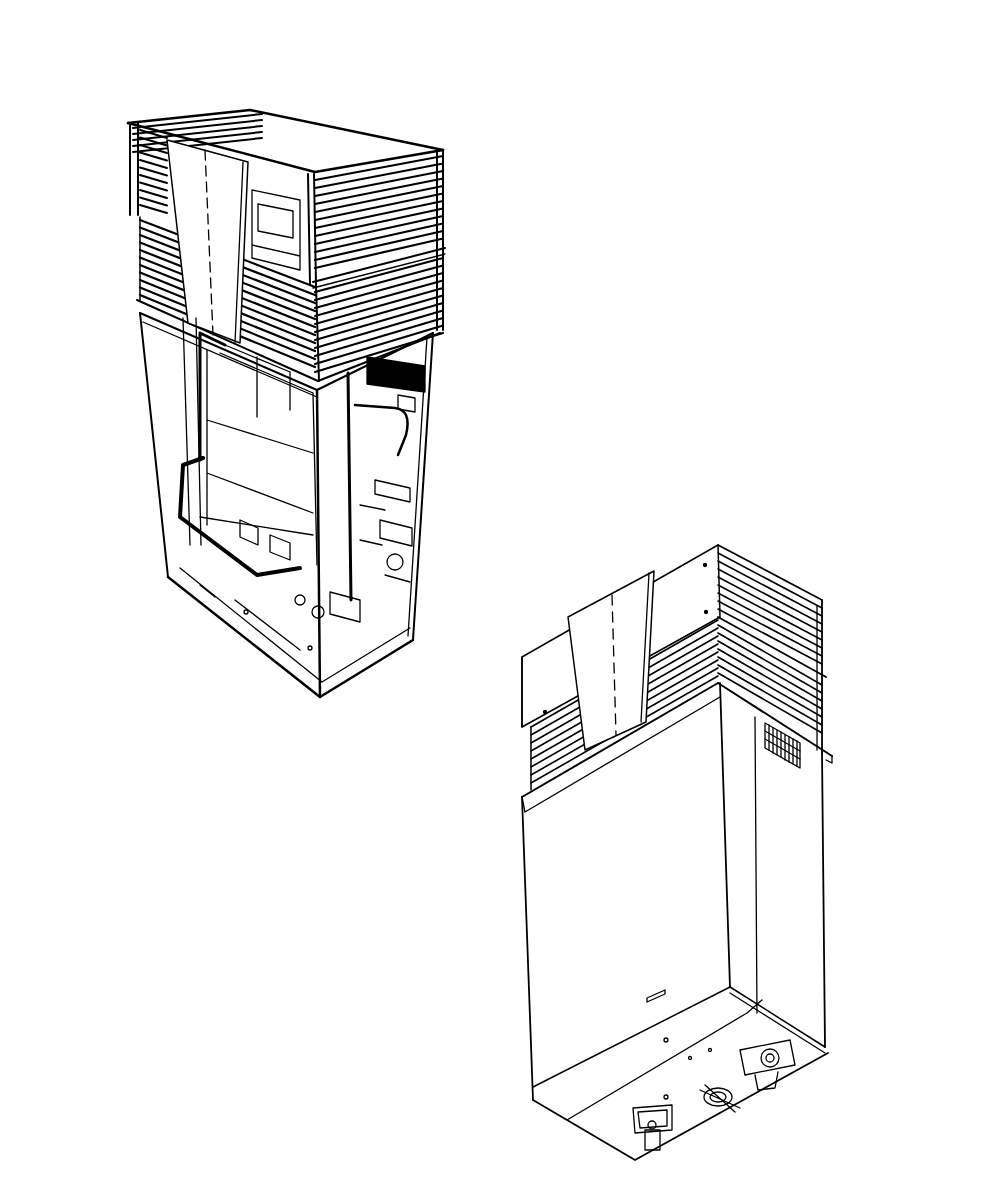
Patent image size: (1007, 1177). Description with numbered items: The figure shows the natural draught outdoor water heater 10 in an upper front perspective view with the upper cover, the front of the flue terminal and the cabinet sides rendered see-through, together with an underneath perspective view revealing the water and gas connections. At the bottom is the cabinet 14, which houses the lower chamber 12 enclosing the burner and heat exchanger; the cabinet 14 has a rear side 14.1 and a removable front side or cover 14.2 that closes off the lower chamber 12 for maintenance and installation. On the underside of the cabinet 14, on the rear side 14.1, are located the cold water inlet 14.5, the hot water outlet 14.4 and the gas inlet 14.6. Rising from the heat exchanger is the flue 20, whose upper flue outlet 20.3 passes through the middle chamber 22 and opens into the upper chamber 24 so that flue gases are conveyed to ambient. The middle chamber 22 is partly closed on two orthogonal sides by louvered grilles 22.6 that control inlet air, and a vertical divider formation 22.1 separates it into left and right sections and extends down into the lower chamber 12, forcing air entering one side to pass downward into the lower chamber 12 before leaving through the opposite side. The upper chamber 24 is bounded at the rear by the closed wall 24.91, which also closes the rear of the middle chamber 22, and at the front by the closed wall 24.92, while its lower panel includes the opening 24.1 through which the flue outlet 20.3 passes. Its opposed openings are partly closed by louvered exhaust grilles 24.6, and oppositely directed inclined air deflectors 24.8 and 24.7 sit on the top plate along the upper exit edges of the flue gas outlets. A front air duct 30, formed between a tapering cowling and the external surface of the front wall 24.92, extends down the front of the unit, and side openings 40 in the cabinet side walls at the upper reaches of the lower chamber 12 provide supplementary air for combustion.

In FIG. 6, the natural draught outdoor water heater 10 is at (567, 67).
In FIG. 6.1, the natural draught outdoor water heater 10 is at (741, 437).
In FIG. 6, the lower chamber 12 is at (183, 440).
In FIG. 6.1, the lower chamber 12 is at (547, 942).
In FIG. 6.1, the cabinet 14 is at (560, 908).
In FIG. 6, the rear side 14.1 is at (402, 602).
In FIG. 6.1, the rear side 14.1 is at (800, 847).
In FIG. 6, the front side or cover 14.2 is at (293, 655).
In FIG. 6.1, the front side or cover 14.2 is at (545, 930).
In FIG. 6.1, the hot water outlet 14.4 is at (662, 1143).
In FIG. 6.1, the cold water inlet 14.5 is at (770, 1077).
In FIG. 6.1, the gas inlet 14.6 is at (713, 1107).
In FIG. 6, the flue 20 is at (300, 413).
In FIG. 6, the flue outlet 20.3 is at (282, 210).
In FIG. 6, the middle chamber 22 is at (442, 308).
In FIG. 6.1, the middle chamber 22 is at (548, 757).
In FIG. 6, the divider formation 22.1 is at (393, 457).
In FIG. 6, the grilles 22.6 is at (440, 285).
In FIG. 6.1, the grilles 22.6 is at (767, 695).
In FIG. 6, the upper chamber 24 is at (448, 228).
In FIG. 6.1, the upper chamber 24 is at (702, 553).
In FIG. 6, the opening 24.1 is at (248, 107).
In FIG. 6, the exhaust grilles 24.6 is at (443, 183).
In FIG. 6.1, the exhaust grilles 24.6 is at (788, 613).
In FIG. 6, the air deflector or top air diffuser 24.7 is at (417, 150).
In FIG. 6.1, the air deflector or top air diffuser 24.7 is at (750, 560).
In FIG. 6, the air deflector or top air diffuser 24.8 is at (223, 110).
In FIG. 6, the rear closed wall 24.91 is at (345, 148).
In FIG. 6.1, the front closed wall 24.92 is at (548, 663).
In FIG. 6, the front air tunnel or duct 30 is at (190, 228).
In FIG. 6.1, the front air tunnel or duct 30 is at (605, 615).
In FIG. 6, the side openings 40 is at (423, 364).
In FIG. 6.1, the side openings 40 is at (790, 752).